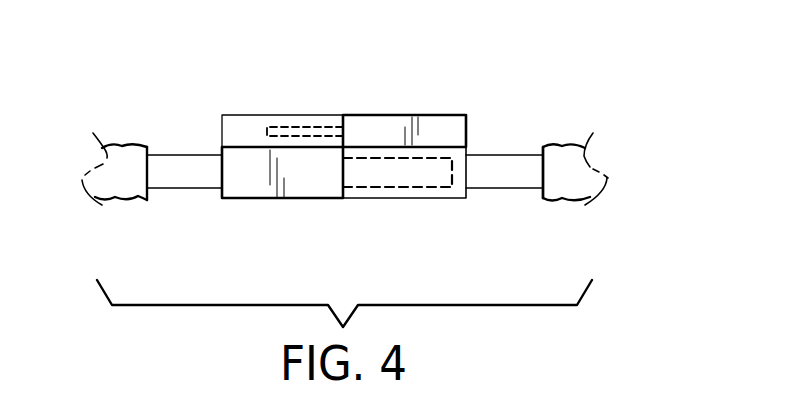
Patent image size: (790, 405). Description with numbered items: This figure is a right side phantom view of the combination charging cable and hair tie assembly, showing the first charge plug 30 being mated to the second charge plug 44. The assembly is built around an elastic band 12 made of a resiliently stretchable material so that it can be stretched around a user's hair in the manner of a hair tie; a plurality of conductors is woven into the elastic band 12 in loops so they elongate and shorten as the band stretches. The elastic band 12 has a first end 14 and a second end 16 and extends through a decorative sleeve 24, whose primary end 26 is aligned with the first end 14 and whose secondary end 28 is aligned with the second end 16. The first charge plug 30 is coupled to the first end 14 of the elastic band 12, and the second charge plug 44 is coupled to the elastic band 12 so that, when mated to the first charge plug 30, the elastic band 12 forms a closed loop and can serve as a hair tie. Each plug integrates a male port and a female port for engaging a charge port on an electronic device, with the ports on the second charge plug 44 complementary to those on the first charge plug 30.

The elastic band 12 is at (345, 153).
The first end 14 is at (223, 171).
The second end 16 is at (455, 175).
The decorative sleeve 24 is at (562, 197).
The primary end 26 is at (147, 172).
The secondary end 28 is at (540, 172).
The first charge plug 30 is at (277, 198).
The second charge plug 44 is at (437, 115).